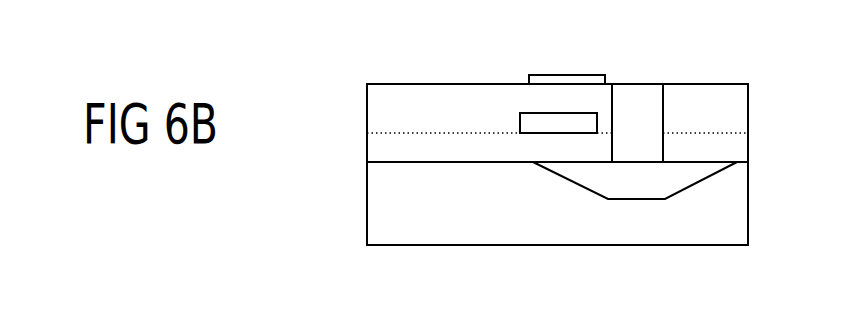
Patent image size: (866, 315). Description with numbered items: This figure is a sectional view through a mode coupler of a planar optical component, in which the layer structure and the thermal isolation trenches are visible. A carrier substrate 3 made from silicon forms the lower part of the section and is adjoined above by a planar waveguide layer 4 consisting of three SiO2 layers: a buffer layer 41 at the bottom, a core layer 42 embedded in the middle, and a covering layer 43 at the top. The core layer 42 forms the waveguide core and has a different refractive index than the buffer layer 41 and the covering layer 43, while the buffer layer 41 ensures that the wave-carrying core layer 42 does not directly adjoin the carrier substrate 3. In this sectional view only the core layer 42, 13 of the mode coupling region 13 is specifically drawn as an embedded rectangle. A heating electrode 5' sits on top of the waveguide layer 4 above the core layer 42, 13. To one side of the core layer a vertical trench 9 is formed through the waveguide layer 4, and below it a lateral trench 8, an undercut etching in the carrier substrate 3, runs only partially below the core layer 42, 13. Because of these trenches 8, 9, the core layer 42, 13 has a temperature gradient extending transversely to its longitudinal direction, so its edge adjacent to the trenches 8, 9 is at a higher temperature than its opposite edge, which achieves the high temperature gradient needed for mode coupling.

The carrier substrate 3 is at (748, 195).
The planar waveguide layer 4 is at (748, 110).
The heating electrode 5' is at (567, 50).
The lateral trench 8 is at (653, 192).
The vertical trench 9 is at (645, 110).
The mode coupling region 13 is at (527, 122).
The buffer layer 41 is at (375, 152).
The core layer 42 is at (533, 76).
The covering layer 43 is at (382, 99).